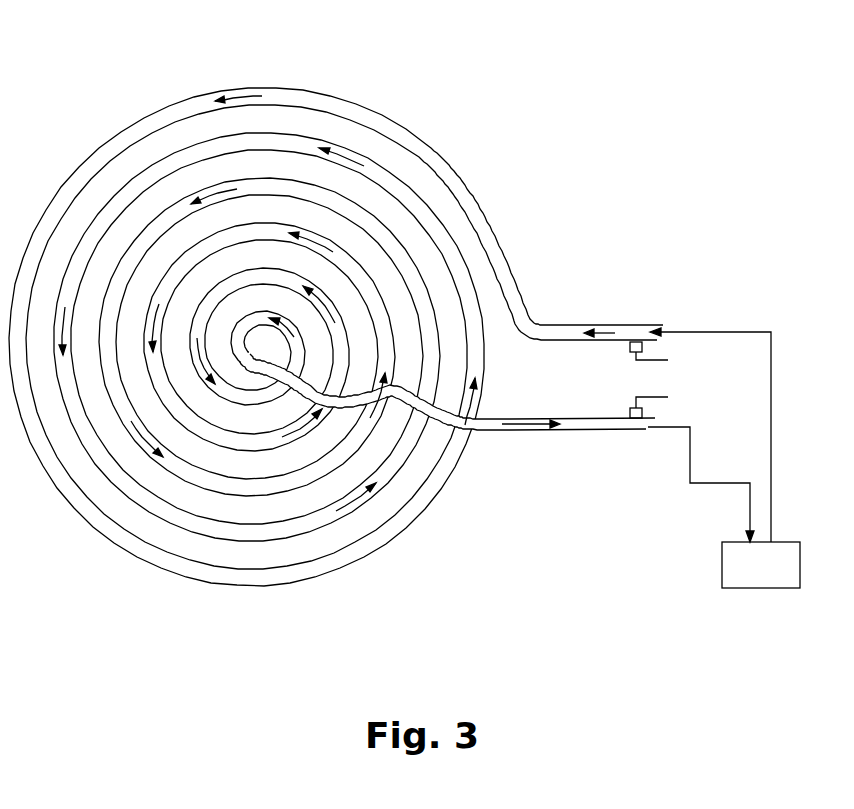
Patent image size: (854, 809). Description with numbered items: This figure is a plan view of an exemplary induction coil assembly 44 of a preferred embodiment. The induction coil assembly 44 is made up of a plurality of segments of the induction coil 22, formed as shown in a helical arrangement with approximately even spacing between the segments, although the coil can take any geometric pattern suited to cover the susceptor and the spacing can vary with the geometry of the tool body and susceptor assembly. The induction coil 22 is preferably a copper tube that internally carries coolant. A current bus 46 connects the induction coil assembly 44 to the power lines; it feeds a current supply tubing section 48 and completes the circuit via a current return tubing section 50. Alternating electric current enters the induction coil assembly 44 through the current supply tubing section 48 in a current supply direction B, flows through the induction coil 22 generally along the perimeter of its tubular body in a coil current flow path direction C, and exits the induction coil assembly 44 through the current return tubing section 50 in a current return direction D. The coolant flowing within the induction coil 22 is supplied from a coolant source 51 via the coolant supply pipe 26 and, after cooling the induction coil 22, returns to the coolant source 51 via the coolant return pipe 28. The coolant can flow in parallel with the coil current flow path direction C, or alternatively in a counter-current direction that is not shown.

The induction coil assembly 44 is at (428, 87).
The induction coil 22 is at (458, 180).
The current supply tubing section 48 is at (631, 325).
The current return tubing section 50 is at (633, 429).
The current bus 46 is at (676, 343).
The coolant supply pipe 26 is at (775, 406).
The coolant return pipe 28 is at (700, 481).
The coolant source 51 is at (722, 582).
The current supply direction B is at (593, 324).
The coil current flow path direction C is at (316, 146).
The current return direction D is at (524, 430).